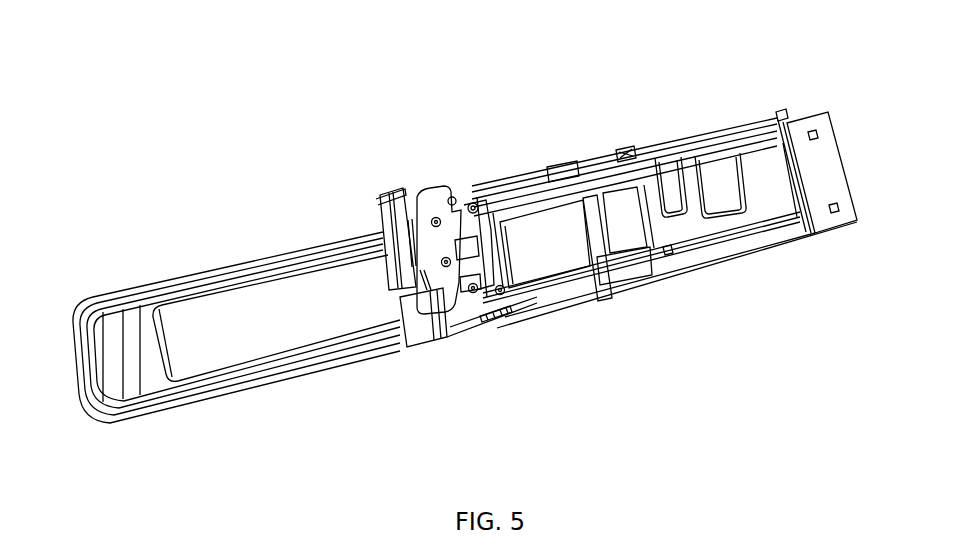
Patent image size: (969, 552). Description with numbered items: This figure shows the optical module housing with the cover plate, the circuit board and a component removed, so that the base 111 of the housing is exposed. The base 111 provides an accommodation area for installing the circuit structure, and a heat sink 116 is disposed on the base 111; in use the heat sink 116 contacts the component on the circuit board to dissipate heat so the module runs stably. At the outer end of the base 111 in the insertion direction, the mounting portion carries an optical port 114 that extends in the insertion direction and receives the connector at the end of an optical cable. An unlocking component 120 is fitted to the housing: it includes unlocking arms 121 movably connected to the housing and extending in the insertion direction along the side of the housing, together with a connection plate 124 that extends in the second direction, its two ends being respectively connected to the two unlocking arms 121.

The base 111 is at (753, 247).
The optical port 114 is at (397, 293).
The heat sink 116 is at (725, 180).
The unlocking component 120 is at (295, 250).
The unlocking arm 121 is at (532, 165).
The connection plate 124 is at (433, 193).